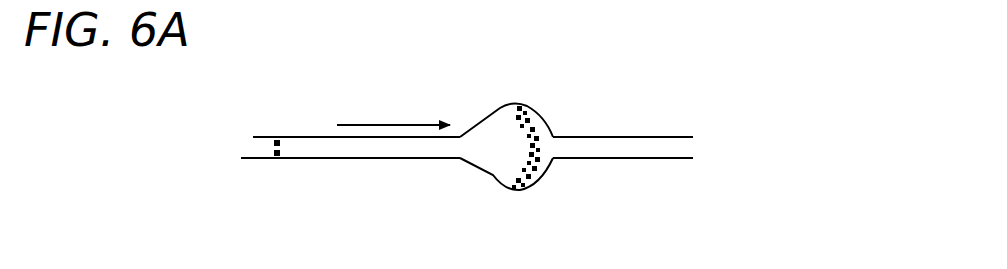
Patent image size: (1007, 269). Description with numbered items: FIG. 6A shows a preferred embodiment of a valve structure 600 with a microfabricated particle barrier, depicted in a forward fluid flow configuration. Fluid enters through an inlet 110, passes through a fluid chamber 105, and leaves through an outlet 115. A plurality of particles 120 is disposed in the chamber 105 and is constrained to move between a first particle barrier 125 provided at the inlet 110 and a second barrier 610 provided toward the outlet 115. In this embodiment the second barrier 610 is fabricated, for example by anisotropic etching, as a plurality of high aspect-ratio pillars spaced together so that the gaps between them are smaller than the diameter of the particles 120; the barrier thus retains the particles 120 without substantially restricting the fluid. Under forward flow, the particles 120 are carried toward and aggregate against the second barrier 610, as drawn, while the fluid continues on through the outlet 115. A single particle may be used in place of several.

The valve structure 600 is at (694, 89).
The inlet 110 is at (252, 142).
The outlet 115 is at (600, 143).
The fluid chamber 105 is at (438, 174).
The particles 120 is at (518, 145).
The second barrier 610 is at (546, 152).
The first particle barrier 125 is at (277, 160).